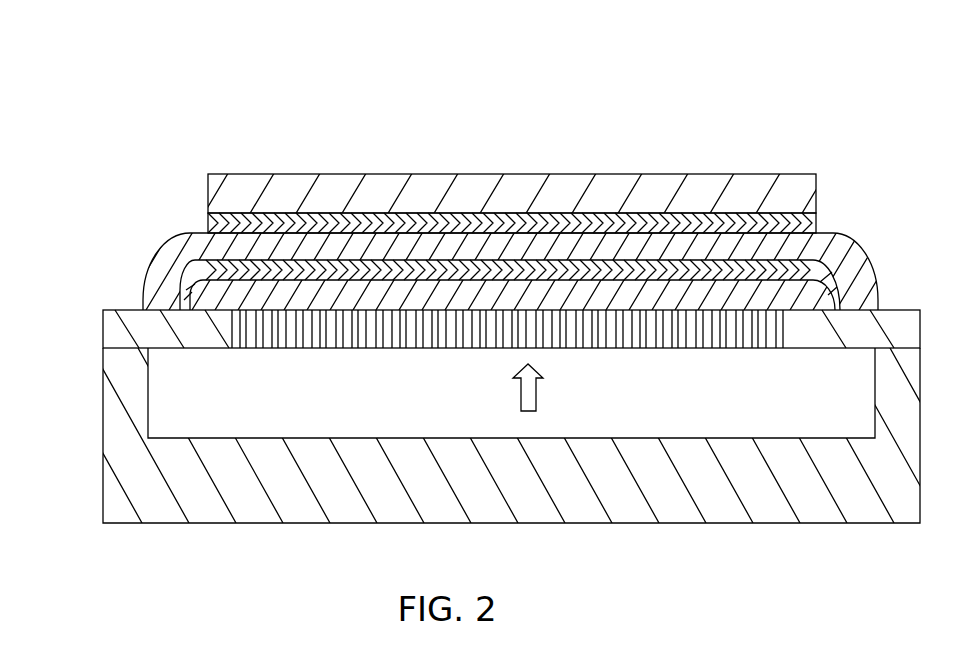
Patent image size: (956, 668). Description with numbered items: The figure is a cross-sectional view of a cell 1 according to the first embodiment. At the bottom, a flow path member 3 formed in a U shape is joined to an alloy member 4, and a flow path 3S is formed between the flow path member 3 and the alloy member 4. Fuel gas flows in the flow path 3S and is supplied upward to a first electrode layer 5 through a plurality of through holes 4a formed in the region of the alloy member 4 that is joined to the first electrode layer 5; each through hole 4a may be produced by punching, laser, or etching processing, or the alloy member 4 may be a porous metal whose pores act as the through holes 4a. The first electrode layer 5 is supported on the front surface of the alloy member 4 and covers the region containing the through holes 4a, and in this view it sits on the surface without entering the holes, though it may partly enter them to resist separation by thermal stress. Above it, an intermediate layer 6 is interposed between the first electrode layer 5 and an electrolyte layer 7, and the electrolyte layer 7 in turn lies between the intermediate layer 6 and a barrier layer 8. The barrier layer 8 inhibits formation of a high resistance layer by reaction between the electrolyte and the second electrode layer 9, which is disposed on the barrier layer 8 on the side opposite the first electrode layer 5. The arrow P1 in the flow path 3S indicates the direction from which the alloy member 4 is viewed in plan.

The cell 1 is at (849, 93).
The flow path member 3 is at (123, 395).
The flow path 3S is at (423, 409).
The alloy member 4 is at (123, 330).
The through hole 4a is at (303, 342).
The first electrode layer 5 is at (213, 297).
The intermediate layer 6 is at (207, 278).
The electrolyte layer 7 is at (860, 270).
The barrier layer 8 is at (808, 228).
The second electrode layer 9 is at (808, 192).
The arrow P1 is at (530, 395).